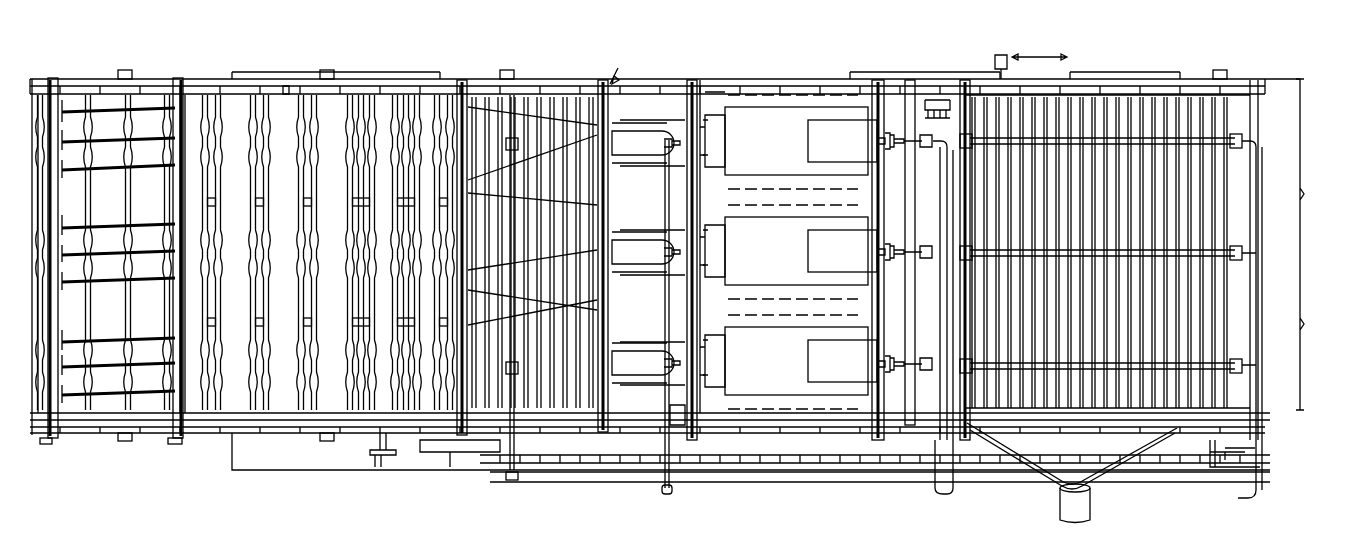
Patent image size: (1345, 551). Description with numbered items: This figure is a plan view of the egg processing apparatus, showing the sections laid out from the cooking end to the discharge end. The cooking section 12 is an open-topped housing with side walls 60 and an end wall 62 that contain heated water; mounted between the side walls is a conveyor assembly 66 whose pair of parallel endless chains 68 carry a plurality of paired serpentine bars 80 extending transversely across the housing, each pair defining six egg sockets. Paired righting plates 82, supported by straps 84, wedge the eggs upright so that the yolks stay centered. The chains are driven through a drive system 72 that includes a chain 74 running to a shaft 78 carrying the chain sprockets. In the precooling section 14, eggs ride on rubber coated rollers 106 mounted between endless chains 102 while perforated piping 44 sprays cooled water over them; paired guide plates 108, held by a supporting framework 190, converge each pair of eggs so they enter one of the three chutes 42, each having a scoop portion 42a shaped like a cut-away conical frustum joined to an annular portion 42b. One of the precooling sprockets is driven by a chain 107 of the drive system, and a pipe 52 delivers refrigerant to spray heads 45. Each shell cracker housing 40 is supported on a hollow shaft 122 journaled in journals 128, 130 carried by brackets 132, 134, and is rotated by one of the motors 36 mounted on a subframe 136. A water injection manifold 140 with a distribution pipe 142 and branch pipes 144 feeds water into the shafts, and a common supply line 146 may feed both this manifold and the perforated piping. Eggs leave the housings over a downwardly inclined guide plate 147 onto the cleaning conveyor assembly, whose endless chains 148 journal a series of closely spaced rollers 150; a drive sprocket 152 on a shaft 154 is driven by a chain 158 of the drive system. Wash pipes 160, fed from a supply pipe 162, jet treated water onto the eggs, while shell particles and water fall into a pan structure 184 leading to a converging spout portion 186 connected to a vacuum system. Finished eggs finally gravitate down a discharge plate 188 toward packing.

The cooking section 12 is at (224, 64).
The precooling section 14 is at (508, 52).
The motor 36 is at (848, 146).
The shell cracker housing 40 is at (774, 163).
The chute 42 is at (675, 70).
The scoop portion 42a is at (648, 152).
The annular portion 42b is at (710, 135).
The perforated piping 44 is at (554, 100).
The spray head 45 is at (647, 235).
The pipe 52 is at (664, 444).
The side wall 60 is at (372, 76).
The end wall 62 is at (34, 260).
The conveyor assembly 66 is at (286, 80).
The endless chain 68 is at (342, 82).
The drive system 72 is at (752, 447).
The chain 74 is at (454, 458).
The shaft 78 is at (418, 454).
The serpentine bar 80 is at (255, 150).
The righting plate 82 is at (110, 80).
The strap 84 is at (52, 78).
The endless chain 102 is at (592, 88).
The rubber coated roller 106 is at (523, 85).
The chain 107 is at (563, 453).
The guide plate 108 is at (466, 78).
The hollow shaft 122 is at (875, 142).
The journal 128 is at (917, 157).
The journal 130 is at (668, 182).
The bracket 132 is at (905, 74).
The bracket 134 is at (710, 71).
The subframe 136 is at (876, 440).
The water injection manifold 140 is at (935, 153).
The distribution pipe 142 is at (926, 437).
The branch pipe 144 is at (958, 333).
The conveyor assembly 146 is at (690, 475).
The guide plate 147 is at (960, 82).
The endless chain 148 is at (1170, 86).
The roller 150 is at (1098, 84).
The drive sprocket 152 is at (1237, 479).
The shaft 154 is at (1233, 443).
The chain 158 is at (873, 478).
The wash pipe 160 is at (1233, 140).
The supply pipe 162 is at (1258, 291).
The pan structure 184 is at (1048, 470).
The spout portion 186 is at (1085, 505).
The discharge plate 188 is at (1288, 244).
The supporting framework 190 is at (618, 72).